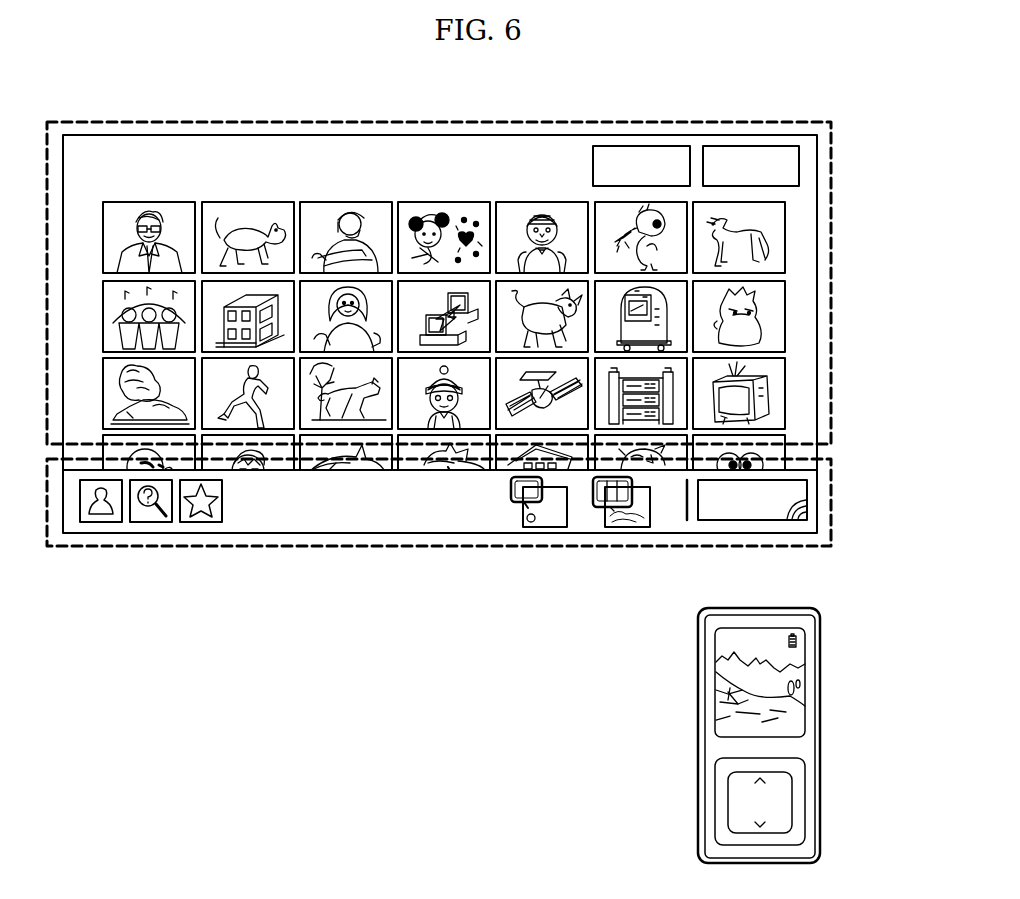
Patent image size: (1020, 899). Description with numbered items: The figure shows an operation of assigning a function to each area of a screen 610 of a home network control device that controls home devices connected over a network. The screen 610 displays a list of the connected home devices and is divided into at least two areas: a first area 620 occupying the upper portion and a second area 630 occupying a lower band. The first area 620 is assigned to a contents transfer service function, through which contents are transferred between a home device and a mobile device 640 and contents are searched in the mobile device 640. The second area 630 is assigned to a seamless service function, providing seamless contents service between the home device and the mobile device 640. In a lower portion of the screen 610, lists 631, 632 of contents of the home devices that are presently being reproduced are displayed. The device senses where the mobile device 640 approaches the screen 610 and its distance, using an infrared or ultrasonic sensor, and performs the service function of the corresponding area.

The screen 610 is at (817, 318).
The first area 620 is at (832, 207).
The second area 630 is at (476, 531).
The list of contents of home devices 631 is at (546, 528).
The list of contents of home devices 632 is at (628, 528).
The mobile device 640 is at (820, 735).